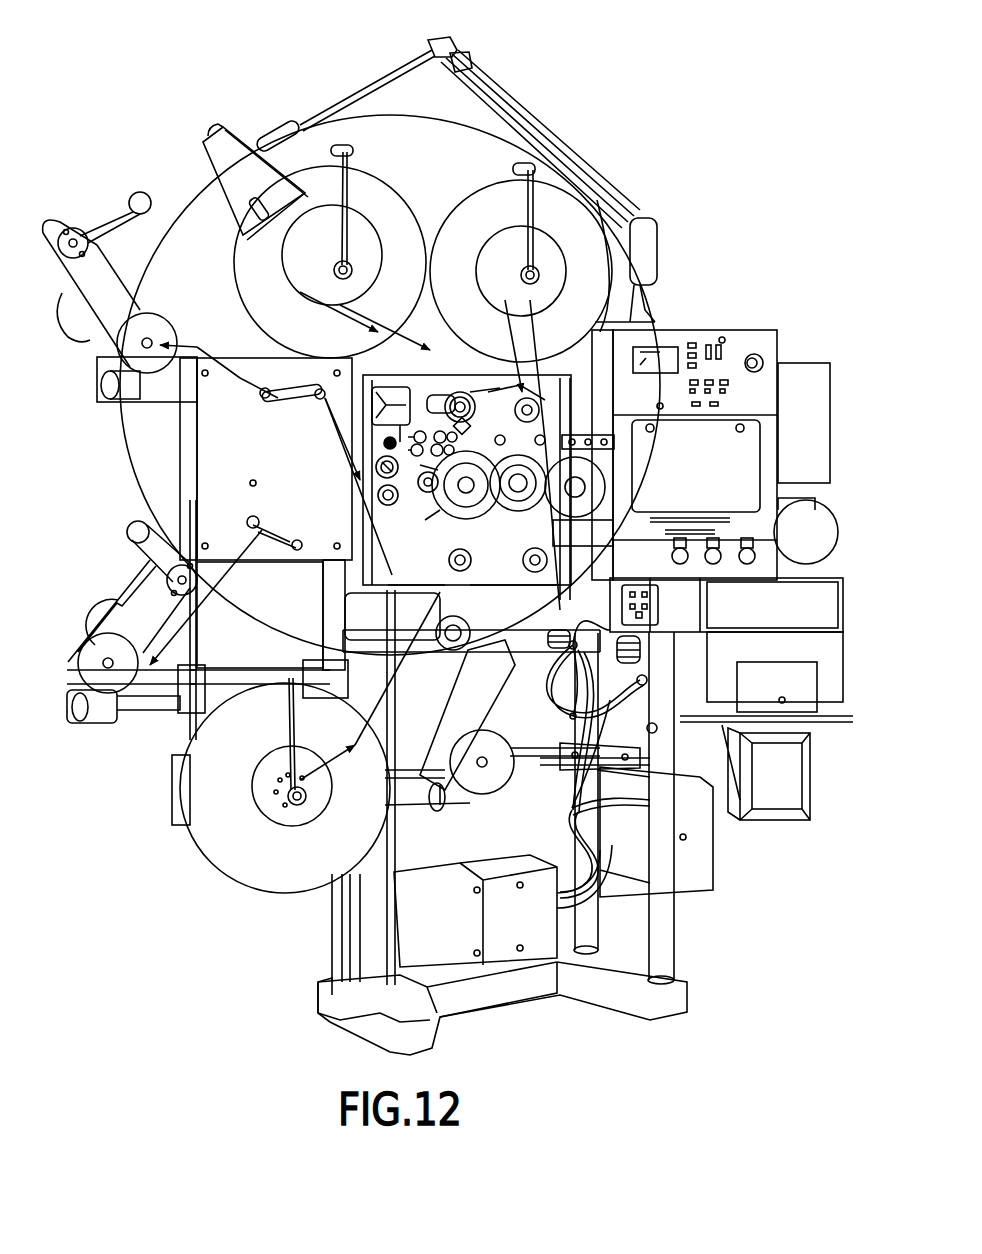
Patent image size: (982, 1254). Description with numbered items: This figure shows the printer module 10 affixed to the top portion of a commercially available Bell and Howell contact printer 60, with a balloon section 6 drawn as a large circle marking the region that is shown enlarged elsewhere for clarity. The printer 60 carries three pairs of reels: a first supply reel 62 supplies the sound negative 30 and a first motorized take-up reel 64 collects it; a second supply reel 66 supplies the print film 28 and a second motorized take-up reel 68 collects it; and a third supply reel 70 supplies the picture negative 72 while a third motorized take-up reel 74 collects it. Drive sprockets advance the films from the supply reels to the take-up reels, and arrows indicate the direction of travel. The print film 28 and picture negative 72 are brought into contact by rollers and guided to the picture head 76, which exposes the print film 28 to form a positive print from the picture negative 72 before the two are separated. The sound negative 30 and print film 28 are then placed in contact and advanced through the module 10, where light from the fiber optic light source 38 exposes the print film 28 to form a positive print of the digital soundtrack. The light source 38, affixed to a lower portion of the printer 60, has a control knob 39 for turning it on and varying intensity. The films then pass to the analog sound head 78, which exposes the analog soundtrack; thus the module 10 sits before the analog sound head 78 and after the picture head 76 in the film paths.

The enlarged detail circle 6 is at (194, 203).
The printer module 10 is at (478, 669).
The print film 28 is at (302, 292).
The sound negative 30 is at (238, 573).
The fiber optic light source 38 is at (845, 578).
The control knob 39 is at (778, 628).
The contact printer 60 is at (648, 121).
The first supply reel 62 is at (263, 888).
The first motorized take-up reel 64 is at (85, 686).
The second supply reel 66 is at (240, 268).
The second motorized take-up reel 68 is at (124, 353).
The third supply reel 70 is at (571, 194).
The picture negative 72 is at (516, 255).
The third motorized take-up reel 74 is at (485, 795).
The picture head 76 is at (613, 500).
The analog sound head 78 is at (392, 518).